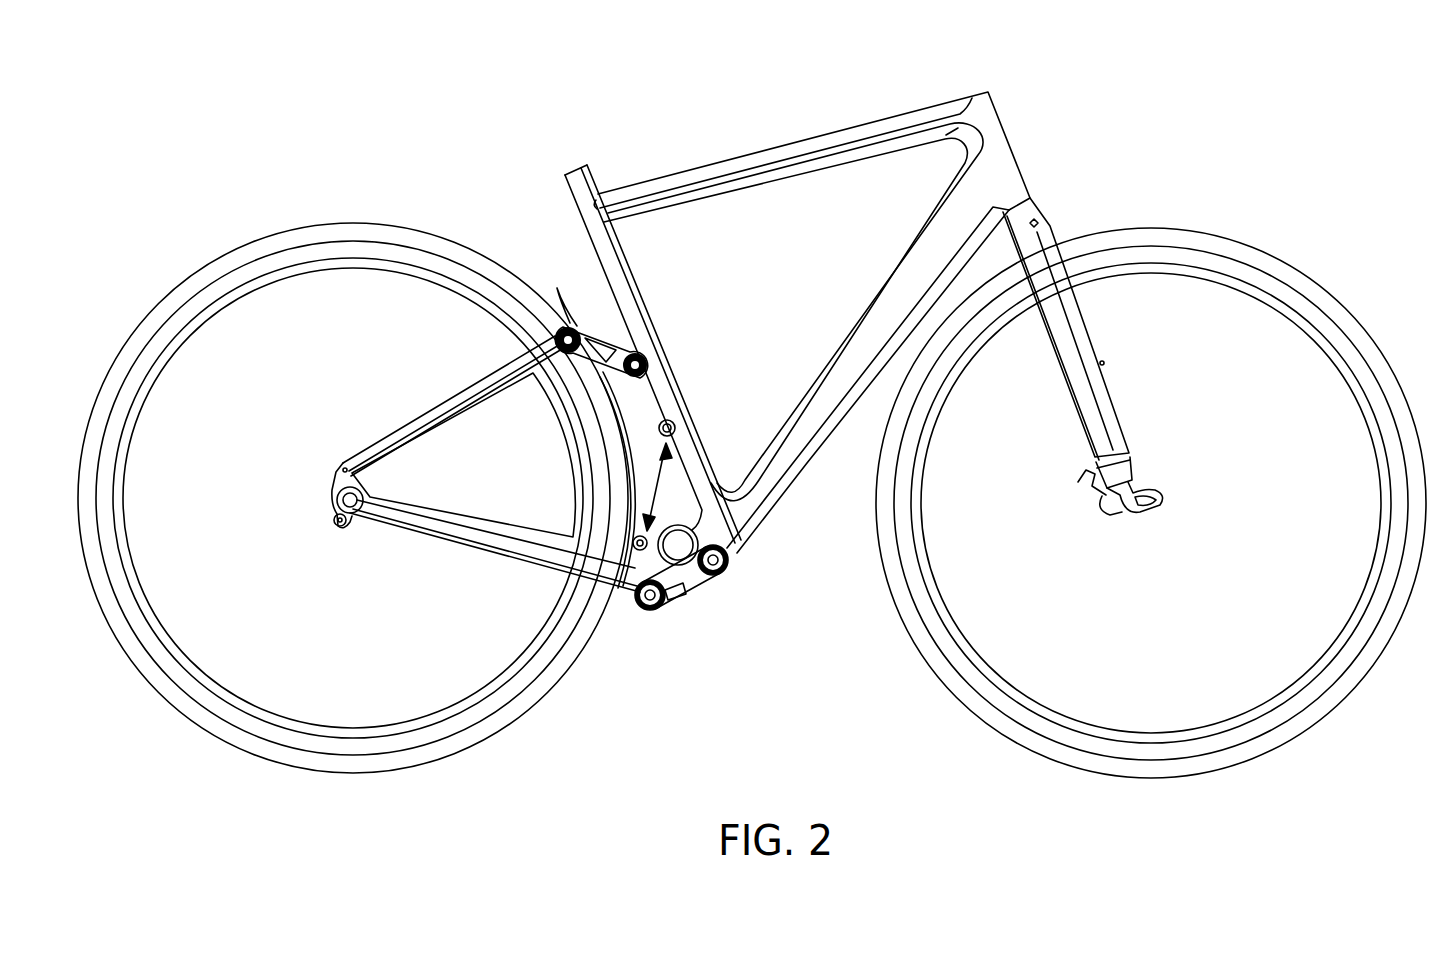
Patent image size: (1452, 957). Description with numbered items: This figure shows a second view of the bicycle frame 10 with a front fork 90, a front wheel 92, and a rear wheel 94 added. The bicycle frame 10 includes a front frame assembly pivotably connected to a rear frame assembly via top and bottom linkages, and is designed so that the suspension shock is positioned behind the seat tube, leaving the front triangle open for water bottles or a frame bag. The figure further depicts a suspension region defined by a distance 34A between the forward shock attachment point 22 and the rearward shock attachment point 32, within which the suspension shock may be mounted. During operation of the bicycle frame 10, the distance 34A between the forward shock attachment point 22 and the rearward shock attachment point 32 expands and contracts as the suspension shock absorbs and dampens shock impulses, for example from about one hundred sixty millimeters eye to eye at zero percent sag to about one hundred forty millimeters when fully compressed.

The bicycle frame 10 is at (458, 145).
The forward shock attachment point 22 is at (676, 426).
The rearward shock attachment point 32 is at (633, 596).
The distance 34A is at (660, 490).
The front fork 90 is at (1057, 257).
The front wheel 92 is at (1308, 285).
The rear wheel 94 is at (185, 295).